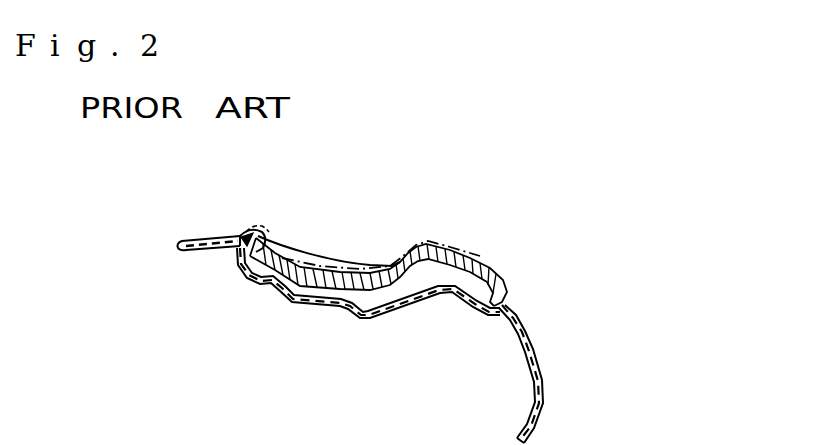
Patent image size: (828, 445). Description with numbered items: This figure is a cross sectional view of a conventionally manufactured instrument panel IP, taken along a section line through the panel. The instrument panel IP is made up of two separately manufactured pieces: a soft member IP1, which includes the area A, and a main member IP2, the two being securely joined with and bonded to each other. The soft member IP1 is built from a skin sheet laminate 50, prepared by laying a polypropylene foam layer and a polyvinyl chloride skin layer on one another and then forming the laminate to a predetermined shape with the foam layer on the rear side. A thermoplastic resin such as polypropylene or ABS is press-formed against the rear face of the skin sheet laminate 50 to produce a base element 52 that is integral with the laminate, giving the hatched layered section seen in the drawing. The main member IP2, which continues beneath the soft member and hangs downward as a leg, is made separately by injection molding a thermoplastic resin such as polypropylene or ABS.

The skin sheet laminate 50 is at (266, 249).
The base element 52 is at (327, 268).
The area A is at (480, 256).
The instrument panel IP is at (653, 323).
The soft member IP1 is at (399, 253).
The main member IP2 is at (528, 357).